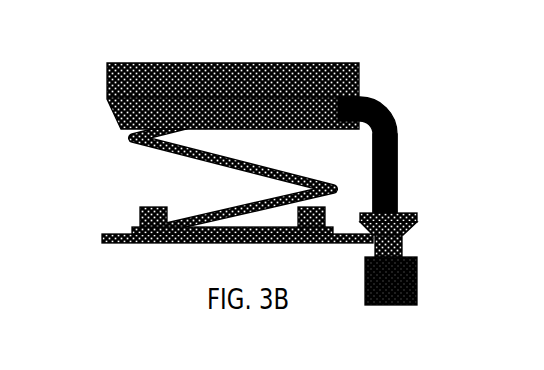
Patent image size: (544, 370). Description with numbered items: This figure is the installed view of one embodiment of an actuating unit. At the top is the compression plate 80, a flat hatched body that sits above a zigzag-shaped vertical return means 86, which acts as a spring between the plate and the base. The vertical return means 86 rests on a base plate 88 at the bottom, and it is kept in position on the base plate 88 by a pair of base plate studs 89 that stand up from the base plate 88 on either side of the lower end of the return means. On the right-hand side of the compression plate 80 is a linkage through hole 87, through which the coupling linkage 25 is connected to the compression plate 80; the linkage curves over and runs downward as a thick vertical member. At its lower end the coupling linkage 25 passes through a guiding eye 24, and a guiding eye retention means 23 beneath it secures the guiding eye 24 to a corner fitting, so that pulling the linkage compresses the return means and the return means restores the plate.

The compression plate 80 is at (325, 84).
The linkage through hole (compression plate) 87 is at (358, 93).
The coupling linkage 25 is at (397, 152).
The guiding eye 24 is at (392, 243).
The guiding eye retention means 23 is at (378, 282).
The vertical return means 86 is at (197, 158).
The base plate 88 is at (112, 233).
The base plate studs 89 is at (297, 211).